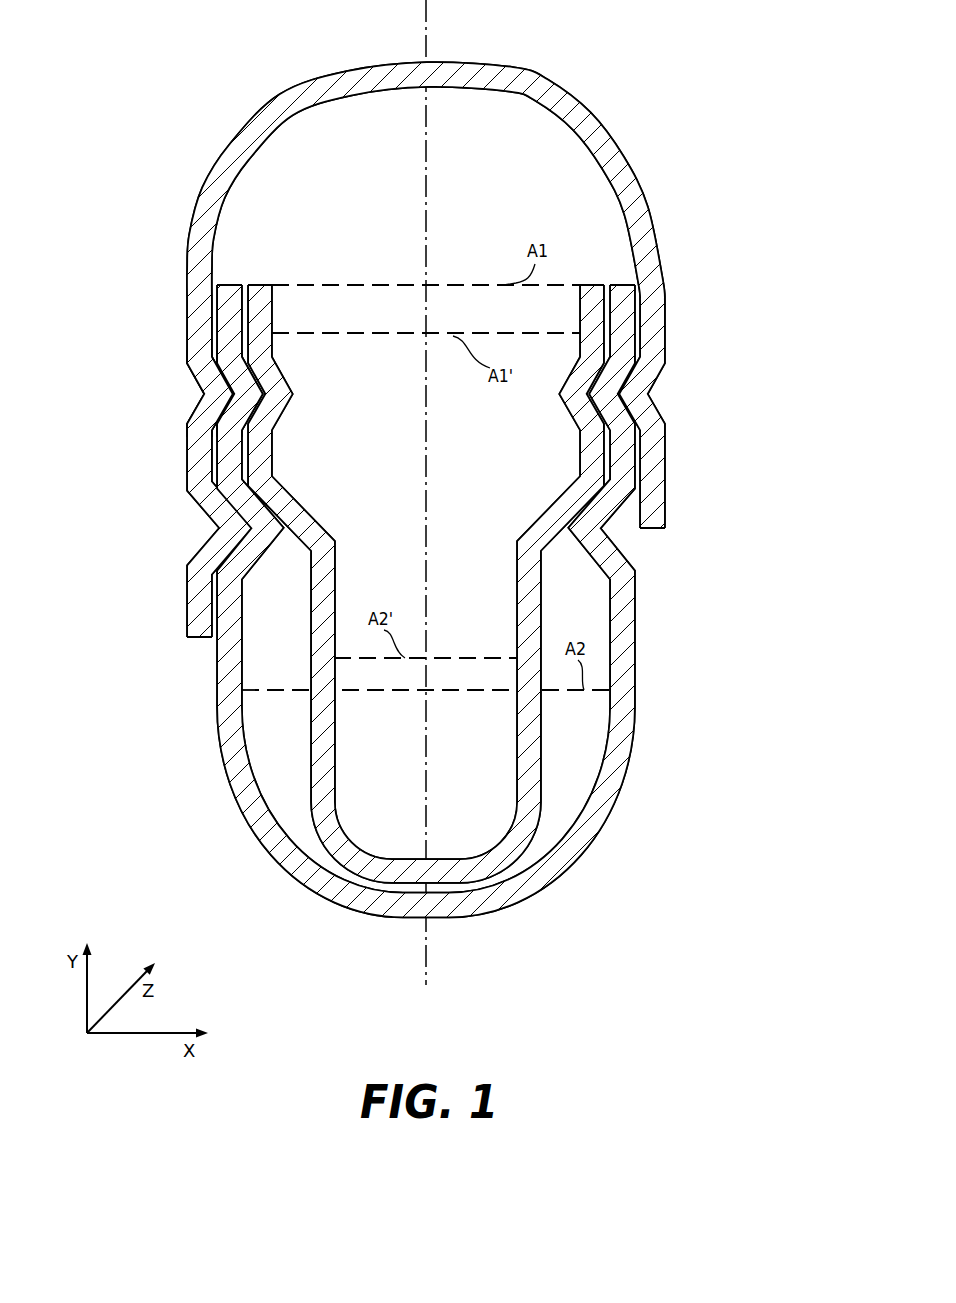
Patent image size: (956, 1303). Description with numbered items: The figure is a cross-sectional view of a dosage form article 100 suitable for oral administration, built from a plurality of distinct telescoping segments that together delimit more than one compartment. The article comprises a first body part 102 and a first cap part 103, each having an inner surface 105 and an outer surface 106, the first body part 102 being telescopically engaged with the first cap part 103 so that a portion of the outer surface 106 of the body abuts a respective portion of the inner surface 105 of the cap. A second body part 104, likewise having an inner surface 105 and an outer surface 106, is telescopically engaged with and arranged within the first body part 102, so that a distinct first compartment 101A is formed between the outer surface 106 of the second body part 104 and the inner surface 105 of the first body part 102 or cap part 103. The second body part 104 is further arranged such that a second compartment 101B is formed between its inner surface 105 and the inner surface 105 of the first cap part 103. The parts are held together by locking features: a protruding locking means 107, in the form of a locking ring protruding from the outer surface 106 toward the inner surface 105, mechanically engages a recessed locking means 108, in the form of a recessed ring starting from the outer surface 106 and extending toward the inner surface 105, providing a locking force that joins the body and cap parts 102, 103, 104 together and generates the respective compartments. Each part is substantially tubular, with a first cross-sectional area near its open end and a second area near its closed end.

The dosage form article 100 is at (755, 92).
The first compartment 101A is at (429, 607).
The second compartment 101B is at (454, 333).
The first body part 102 is at (627, 712).
The first cap part 103 is at (656, 330).
The second body part 104 is at (533, 823).
The inner surface 105 is at (640, 244).
The outer surface 106 is at (652, 206).
The protruding locking means 107 is at (222, 395).
The recessed locking means 108 is at (236, 399).